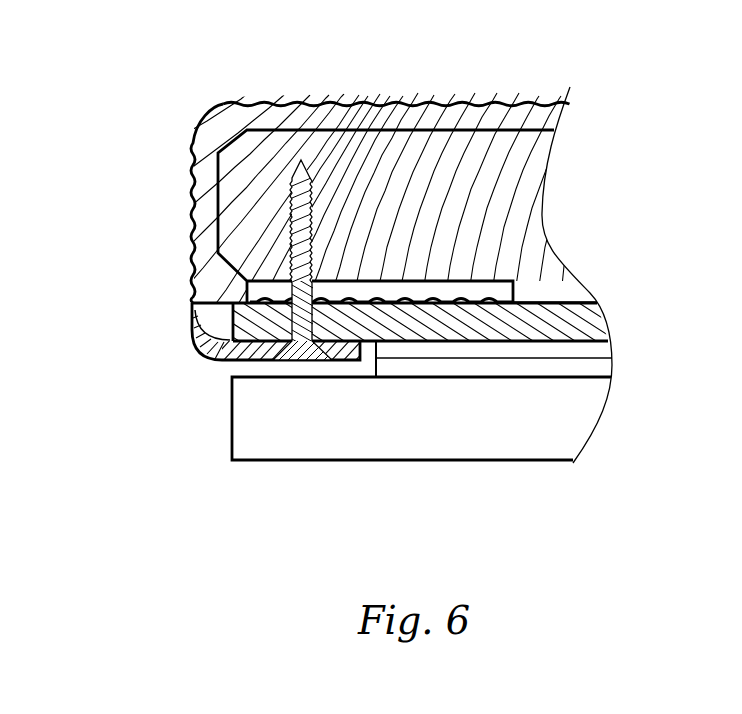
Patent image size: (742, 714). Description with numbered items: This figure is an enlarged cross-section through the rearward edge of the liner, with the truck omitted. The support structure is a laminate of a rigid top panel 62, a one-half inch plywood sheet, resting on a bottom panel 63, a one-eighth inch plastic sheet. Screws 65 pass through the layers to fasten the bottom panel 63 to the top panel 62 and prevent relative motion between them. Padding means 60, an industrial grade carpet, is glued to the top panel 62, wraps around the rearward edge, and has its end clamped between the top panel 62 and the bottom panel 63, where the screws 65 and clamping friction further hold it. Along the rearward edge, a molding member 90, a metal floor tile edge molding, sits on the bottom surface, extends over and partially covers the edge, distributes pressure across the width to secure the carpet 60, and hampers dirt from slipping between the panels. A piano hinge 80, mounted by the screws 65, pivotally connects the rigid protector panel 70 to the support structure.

The padding means 60 is at (383, 117).
The rigid top panel 62 is at (438, 152).
The bottom panel 63 is at (533, 310).
The screws 65 is at (289, 248).
The protector panel 70 is at (496, 433).
The piano hinge 80 is at (418, 360).
The molding member 90 is at (192, 333).